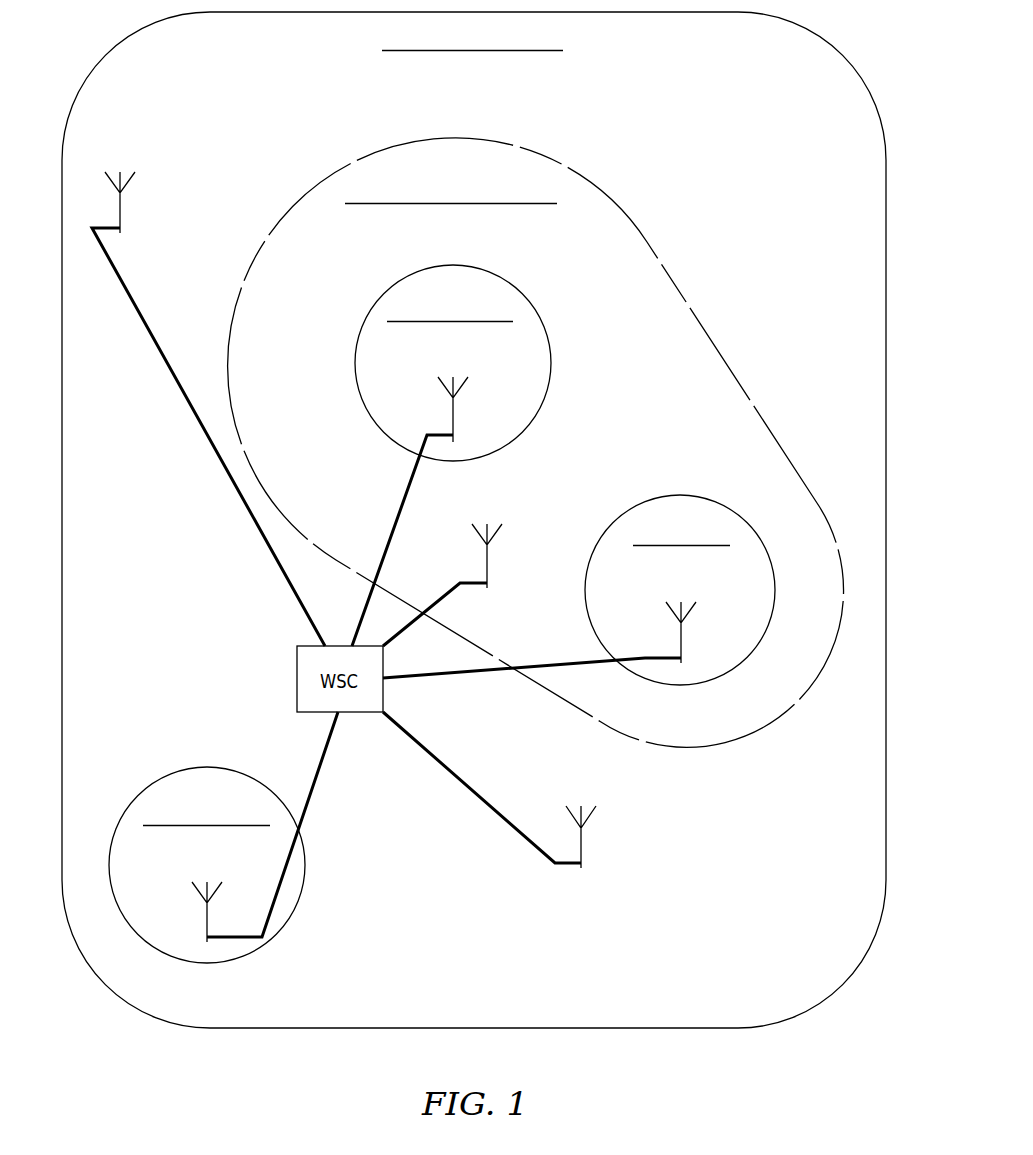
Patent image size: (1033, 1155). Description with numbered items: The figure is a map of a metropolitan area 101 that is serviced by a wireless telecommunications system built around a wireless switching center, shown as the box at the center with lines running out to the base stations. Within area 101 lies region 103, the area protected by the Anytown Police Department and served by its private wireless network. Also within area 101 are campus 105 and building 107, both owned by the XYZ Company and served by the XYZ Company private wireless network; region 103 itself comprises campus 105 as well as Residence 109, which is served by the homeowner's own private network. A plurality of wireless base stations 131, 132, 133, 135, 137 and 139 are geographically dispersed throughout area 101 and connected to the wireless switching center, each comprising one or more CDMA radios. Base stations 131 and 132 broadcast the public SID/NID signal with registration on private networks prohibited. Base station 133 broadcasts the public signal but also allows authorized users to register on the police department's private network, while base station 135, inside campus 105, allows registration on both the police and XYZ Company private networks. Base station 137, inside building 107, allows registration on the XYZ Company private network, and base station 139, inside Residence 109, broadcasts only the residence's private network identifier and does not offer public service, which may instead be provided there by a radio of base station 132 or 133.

The metropolitan area 101 is at (806, 33).
The region 103 is at (552, 164).
The campus 105 is at (518, 291).
The building 107 is at (144, 788).
The Residence 109 is at (748, 521).
The base station 131 is at (122, 204).
The base station 132 is at (583, 836).
The base station 133 is at (489, 556).
The base station 135 is at (455, 410).
The base station 137 is at (205, 912).
The base station 139 is at (683, 631).